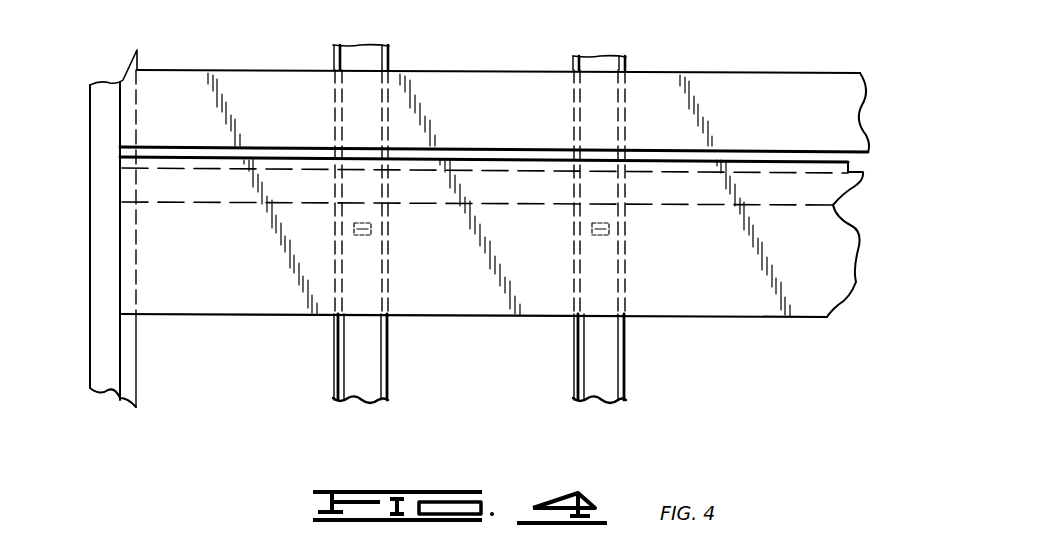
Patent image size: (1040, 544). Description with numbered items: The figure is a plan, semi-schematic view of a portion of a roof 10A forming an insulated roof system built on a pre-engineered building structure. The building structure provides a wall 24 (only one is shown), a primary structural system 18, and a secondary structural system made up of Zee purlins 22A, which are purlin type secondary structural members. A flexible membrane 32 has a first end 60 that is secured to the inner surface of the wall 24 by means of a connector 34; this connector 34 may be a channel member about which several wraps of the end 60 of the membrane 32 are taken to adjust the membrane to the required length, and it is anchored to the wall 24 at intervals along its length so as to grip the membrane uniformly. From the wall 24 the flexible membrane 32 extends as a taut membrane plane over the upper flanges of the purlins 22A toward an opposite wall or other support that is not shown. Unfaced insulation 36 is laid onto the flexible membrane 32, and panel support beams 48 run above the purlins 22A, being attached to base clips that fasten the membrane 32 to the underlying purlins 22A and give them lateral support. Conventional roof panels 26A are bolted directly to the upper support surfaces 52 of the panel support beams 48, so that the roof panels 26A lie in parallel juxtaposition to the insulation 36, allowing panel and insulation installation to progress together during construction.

The roof 10A is at (181, 70).
The primary structural system 18 is at (850, 195).
The Zee purlins 22A is at (335, 45).
The walls 24 is at (90, 237).
The roof panels 26A is at (503, 118).
The flexible membrane 32 is at (508, 282).
The connector 34 is at (128, 373).
The unfaced insulation 36 is at (748, 150).
The panel support beams 48 is at (352, 350).
The upper support surfaces 52 is at (366, 393).
The end of the flexible membrane 60 is at (210, 279).